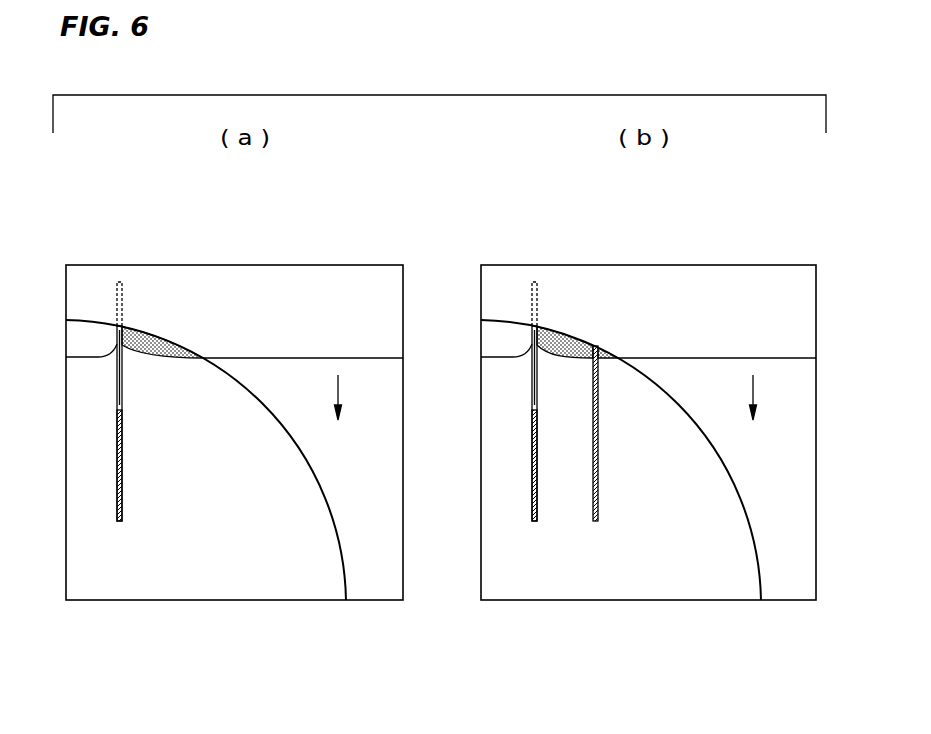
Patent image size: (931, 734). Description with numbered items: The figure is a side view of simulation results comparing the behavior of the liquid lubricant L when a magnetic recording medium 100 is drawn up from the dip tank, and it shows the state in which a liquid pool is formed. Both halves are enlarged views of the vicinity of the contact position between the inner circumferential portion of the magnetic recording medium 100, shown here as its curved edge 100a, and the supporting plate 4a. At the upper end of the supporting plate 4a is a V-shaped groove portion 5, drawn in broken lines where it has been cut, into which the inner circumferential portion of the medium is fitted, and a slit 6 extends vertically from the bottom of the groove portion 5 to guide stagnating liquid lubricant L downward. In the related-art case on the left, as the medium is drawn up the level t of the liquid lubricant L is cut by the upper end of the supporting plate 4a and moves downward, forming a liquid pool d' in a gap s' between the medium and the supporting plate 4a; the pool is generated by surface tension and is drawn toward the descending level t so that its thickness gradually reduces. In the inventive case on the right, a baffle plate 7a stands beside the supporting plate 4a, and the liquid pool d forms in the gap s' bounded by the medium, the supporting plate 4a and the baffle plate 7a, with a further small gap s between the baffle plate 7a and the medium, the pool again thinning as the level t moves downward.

The magnetic recording medium 100 is at (322, 318).
The curved surface of workpiece 100a is at (341, 551).
The level of the liquid lubricant t is at (283, 356).
The liquid lubricant L is at (355, 383).
The liquid pool d' is at (172, 328).
The liquid pool d is at (592, 330).
The gap s' is at (379, 308).
The gap s is at (610, 319).
The supporting plate 4a is at (120, 523).
The baffle plate 7a is at (595, 523).
The V-shaped groove portion 5 is at (125, 290).
The slit 6 is at (123, 392).